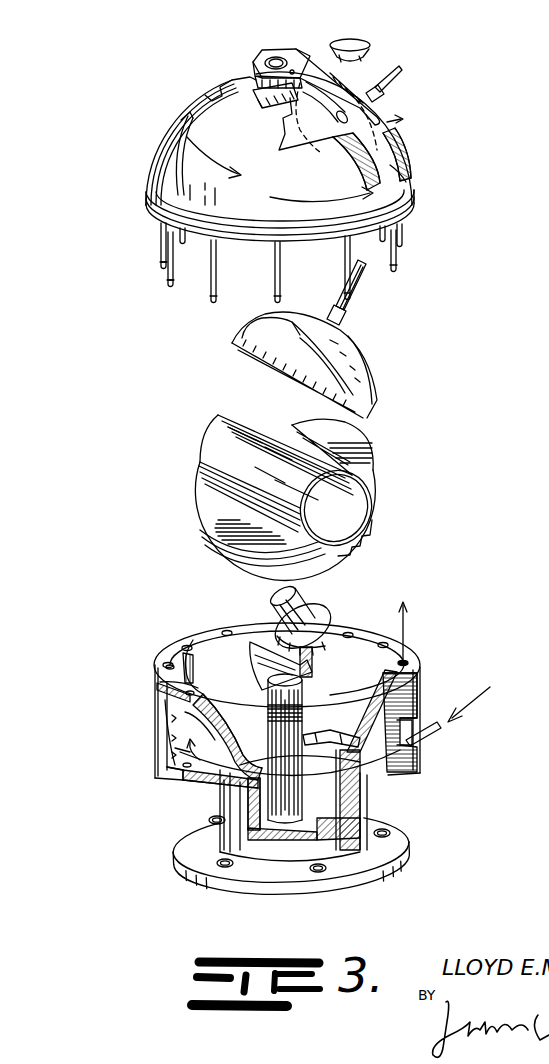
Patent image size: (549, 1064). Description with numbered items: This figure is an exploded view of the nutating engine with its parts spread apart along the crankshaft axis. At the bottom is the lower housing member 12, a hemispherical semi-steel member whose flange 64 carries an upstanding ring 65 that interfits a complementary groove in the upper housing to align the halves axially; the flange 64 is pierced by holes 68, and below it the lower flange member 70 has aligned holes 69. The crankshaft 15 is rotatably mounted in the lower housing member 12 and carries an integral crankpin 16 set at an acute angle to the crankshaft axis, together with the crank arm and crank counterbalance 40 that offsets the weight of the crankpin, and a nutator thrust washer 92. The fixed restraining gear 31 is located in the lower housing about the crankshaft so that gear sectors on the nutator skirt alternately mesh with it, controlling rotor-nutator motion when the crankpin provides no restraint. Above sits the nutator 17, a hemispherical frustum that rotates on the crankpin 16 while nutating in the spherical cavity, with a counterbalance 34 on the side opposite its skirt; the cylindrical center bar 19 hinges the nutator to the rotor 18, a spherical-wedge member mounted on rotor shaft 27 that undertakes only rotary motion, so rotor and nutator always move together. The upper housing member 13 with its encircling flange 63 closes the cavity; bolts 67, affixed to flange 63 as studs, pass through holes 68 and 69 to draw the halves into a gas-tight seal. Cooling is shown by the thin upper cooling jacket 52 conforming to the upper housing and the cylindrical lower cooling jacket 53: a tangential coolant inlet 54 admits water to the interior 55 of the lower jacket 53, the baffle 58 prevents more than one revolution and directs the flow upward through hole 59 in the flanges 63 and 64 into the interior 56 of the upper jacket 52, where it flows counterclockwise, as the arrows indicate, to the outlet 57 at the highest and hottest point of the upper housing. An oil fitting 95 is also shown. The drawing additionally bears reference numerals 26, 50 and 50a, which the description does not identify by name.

The lower housing member 12 is at (205, 638).
The upper housing member 13 is at (203, 237).
The crankshaft 15 is at (282, 825).
The crankpin 16 is at (310, 600).
The nutator 17 is at (372, 515).
The rotor 18 is at (371, 358).
The center bar 19 is at (212, 430).
The mounting plate 26 is at (272, 58).
The rotor shaft 27 is at (352, 312).
The fixed gear sector 31 is at (313, 735).
The counterbalance 34 is at (358, 445).
The crank counterbalance 40 is at (254, 646).
The dome cover 50 is at (405, 161).
The dome wall section 50a is at (418, 187).
The upper cooling jacket 52 is at (172, 160).
The lower cooling jacket 53 is at (178, 752).
The coolant inlet 54 is at (445, 735).
The interior of lower cooling jacket 55 is at (180, 757).
The interior of upper cooling jacket 56 is at (168, 149).
The water outlet 57 is at (334, 61).
The baffle 58 is at (426, 704).
The hole 59 is at (410, 665).
The encircling flange 63 is at (156, 213).
The flange 64 is at (194, 718).
The upstanding ring 65 is at (178, 682).
The bolts 67 is at (167, 287).
The holes 68 is at (164, 665).
The holes 69 is at (180, 782).
The lower flange member 70 is at (197, 790).
The nutator thrust washer 92 is at (330, 626).
The oil fitting 95 is at (322, 92).